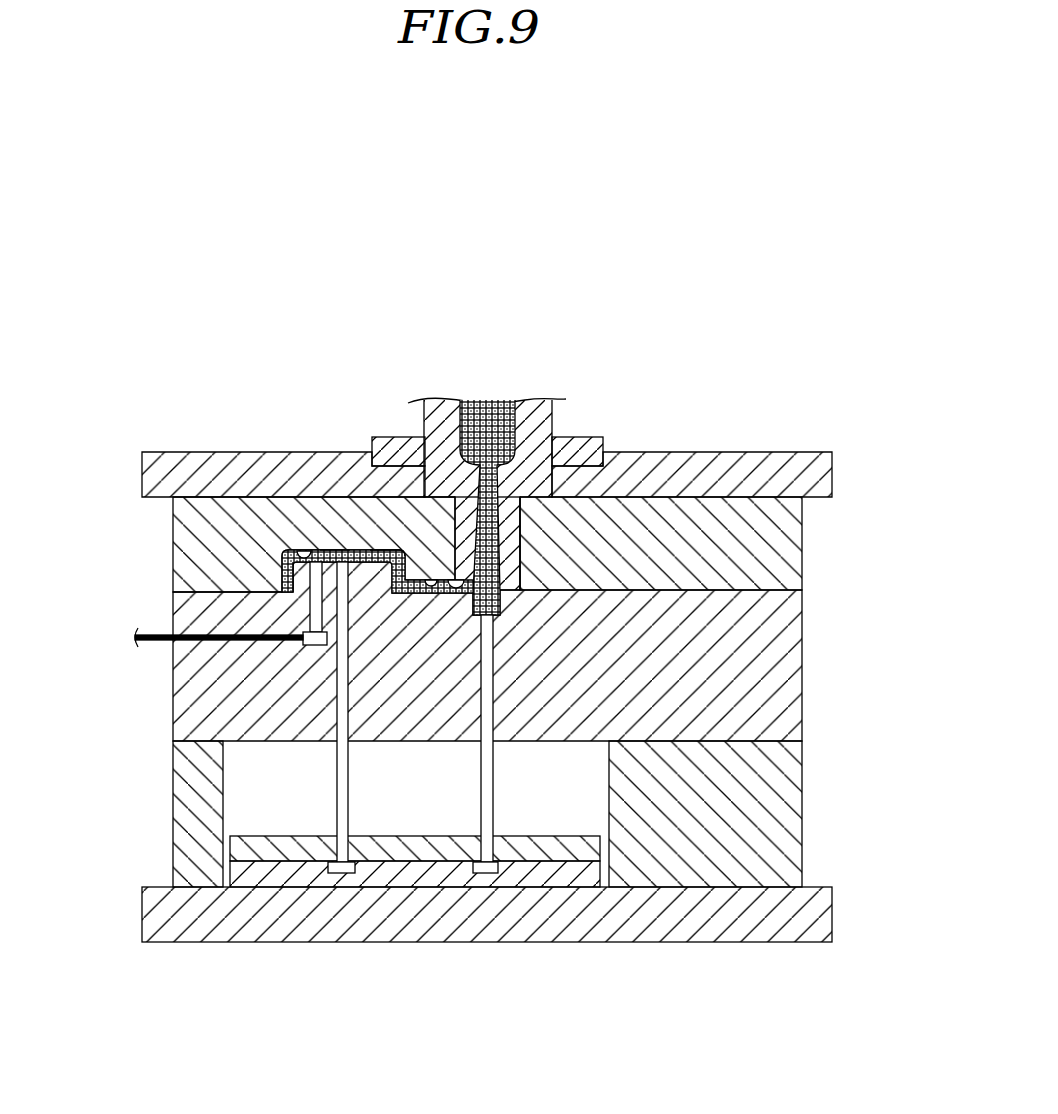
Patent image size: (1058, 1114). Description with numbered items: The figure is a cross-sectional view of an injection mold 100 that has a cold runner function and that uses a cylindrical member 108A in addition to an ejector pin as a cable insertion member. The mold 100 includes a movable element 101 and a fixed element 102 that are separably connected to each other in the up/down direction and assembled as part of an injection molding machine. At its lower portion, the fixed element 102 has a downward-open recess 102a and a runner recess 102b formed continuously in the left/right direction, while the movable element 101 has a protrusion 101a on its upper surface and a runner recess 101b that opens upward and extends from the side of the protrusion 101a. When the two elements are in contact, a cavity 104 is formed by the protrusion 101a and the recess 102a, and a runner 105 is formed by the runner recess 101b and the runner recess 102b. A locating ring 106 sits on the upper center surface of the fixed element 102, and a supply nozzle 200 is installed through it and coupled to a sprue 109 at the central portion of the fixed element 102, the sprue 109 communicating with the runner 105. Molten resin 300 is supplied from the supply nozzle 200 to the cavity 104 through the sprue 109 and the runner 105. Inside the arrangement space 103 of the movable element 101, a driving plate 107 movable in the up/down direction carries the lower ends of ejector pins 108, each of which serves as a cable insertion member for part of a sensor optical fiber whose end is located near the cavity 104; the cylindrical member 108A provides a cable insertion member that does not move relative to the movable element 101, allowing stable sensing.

The mold 100 is at (741, 186).
The movable element 101 is at (794, 662).
The protrusion 101a is at (297, 573).
The runner recess 101b is at (300, 647).
The fixed element 102 is at (794, 552).
The recess 102a is at (297, 550).
The runner recess 102b is at (380, 550).
The arrangement space 103 is at (428, 797).
The cavity 104 is at (335, 550).
The runner 105 is at (417, 562).
The locating ring 106 is at (578, 440).
The driving plate 107 is at (410, 873).
The ejector pins 108 is at (340, 792).
The cylindrical member 108A is at (312, 610).
The sprue 109 is at (521, 530).
The supply nozzle 200 is at (531, 420).
The molten resin 300 is at (490, 430).